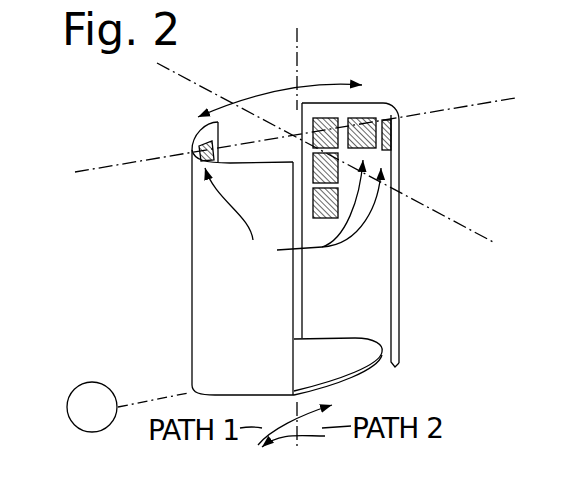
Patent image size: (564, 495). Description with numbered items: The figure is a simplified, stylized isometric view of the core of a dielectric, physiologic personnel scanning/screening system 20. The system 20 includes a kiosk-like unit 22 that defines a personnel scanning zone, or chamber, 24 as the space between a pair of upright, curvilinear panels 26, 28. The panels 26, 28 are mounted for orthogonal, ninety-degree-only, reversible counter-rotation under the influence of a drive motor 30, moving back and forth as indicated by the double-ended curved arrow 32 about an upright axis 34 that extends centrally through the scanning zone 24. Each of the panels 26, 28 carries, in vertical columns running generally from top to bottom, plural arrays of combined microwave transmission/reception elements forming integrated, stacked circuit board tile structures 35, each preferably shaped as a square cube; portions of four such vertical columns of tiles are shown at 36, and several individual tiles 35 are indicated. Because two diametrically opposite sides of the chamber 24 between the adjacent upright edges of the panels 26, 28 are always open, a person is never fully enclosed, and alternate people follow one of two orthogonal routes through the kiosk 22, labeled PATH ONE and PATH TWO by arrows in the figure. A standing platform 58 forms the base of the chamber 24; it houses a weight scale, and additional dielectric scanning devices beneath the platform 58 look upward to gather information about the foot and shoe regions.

The personnel scanning/screening system 20 is at (110, 145).
The kiosk-like unit 22 is at (185, 272).
The personnel scanning zone 24 is at (372, 312).
The curvilinear panel 26 is at (400, 265).
The curvilinear panel 28 is at (192, 236).
The drive motor 30 is at (95, 382).
The double-ended curved arrow 32 is at (266, 88).
The upright axis 34 is at (300, 66).
The circuit board tile structures 35 is at (201, 143).
The vertical columns of tiles 36 is at (293, 214).
The standing platform 58 is at (322, 347).